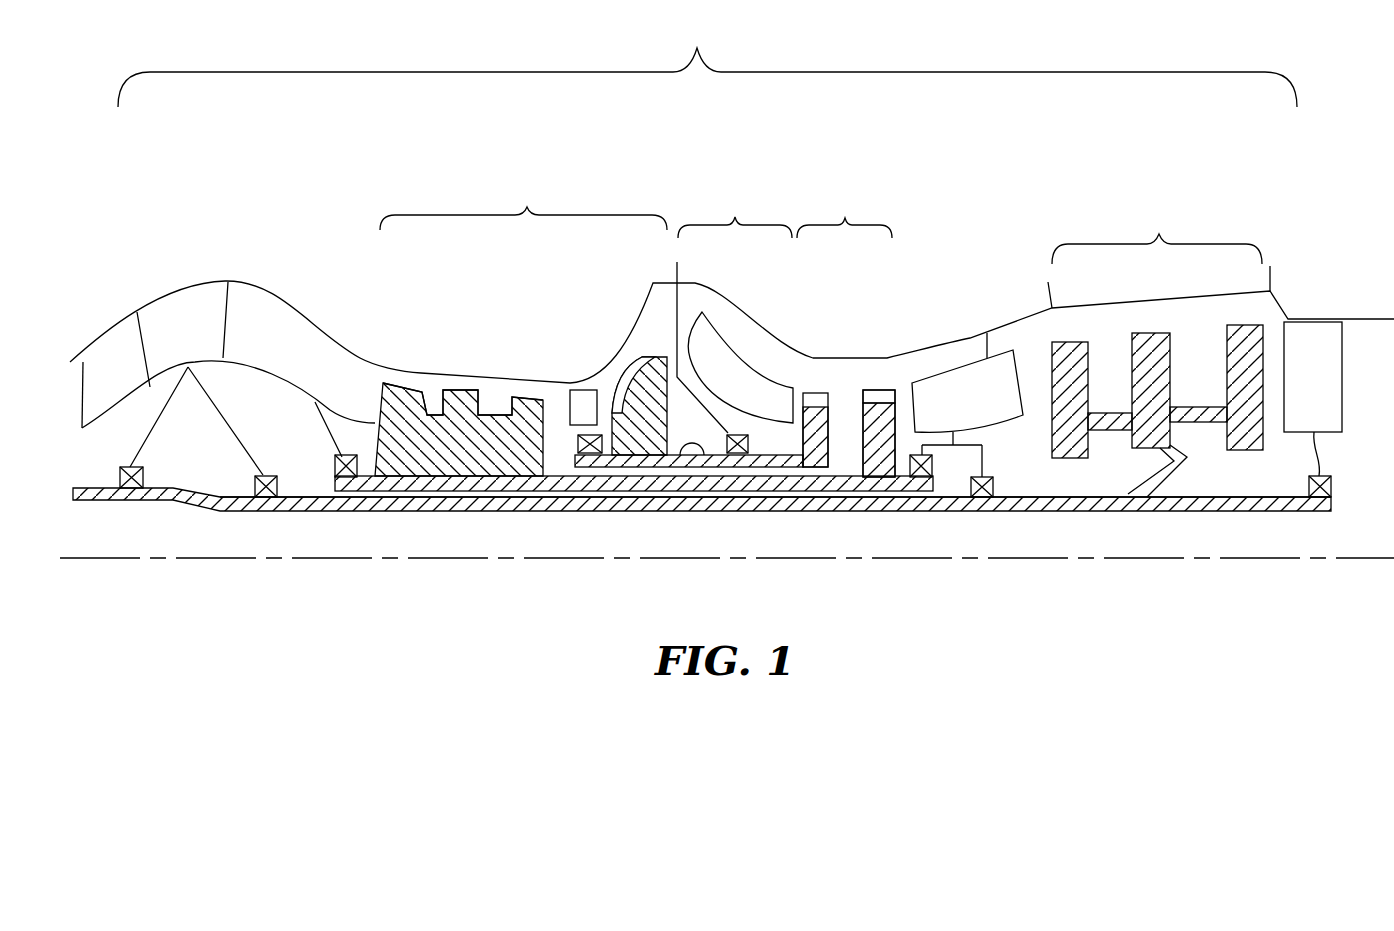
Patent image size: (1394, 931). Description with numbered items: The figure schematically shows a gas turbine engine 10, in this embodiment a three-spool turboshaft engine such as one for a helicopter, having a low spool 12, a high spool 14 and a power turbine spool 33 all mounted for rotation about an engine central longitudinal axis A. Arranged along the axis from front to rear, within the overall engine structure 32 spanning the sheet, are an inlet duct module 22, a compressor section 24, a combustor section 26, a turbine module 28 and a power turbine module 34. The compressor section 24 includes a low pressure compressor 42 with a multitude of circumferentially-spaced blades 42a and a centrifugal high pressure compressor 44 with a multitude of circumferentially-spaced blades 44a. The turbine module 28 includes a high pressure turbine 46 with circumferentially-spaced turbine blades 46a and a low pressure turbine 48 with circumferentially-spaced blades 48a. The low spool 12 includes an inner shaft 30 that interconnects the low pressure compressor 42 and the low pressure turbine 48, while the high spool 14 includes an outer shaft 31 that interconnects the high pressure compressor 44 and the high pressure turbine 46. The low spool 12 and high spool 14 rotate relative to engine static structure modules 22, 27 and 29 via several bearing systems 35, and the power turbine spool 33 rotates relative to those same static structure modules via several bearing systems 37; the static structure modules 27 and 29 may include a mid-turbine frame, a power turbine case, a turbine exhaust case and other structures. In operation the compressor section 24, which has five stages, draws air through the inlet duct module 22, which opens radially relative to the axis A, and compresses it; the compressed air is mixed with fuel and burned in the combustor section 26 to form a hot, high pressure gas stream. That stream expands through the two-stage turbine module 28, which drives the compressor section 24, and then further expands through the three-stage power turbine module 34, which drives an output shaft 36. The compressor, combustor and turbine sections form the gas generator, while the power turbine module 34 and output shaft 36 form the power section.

The gas turbine engine 10 is at (940, 206).
The low spool 12 is at (821, 497).
The high spool 14 is at (680, 463).
The inlet duct module 22 is at (180, 280).
The compressor section 24 is at (523, 199).
The combustor section 26 is at (735, 210).
The engine static structure module 27 is at (953, 409).
The turbine module 28 is at (844, 211).
The engine static structure module 29 is at (1300, 386).
The inner shaft 30 is at (792, 483).
The outer shaft 31 is at (710, 450).
The engine casing 32 is at (483, 373).
The power turbine spool 33 is at (1120, 508).
The power turbine module 34 is at (1157, 326).
The bearing systems 35 is at (348, 473).
The output shaft 36 is at (895, 507).
The bearing systems 37 is at (132, 480).
The low pressure compressor 42 is at (462, 470).
The blades 42a is at (398, 398).
The centrifugal high pressure compressor 44 is at (655, 348).
The blades 44a is at (632, 387).
The high pressure turbine 46 is at (813, 397).
The turbine blades 46a is at (805, 413).
The low pressure turbine 48 is at (883, 423).
The blades 48a is at (878, 395).
The engine central longitudinal axis A is at (1387, 556).